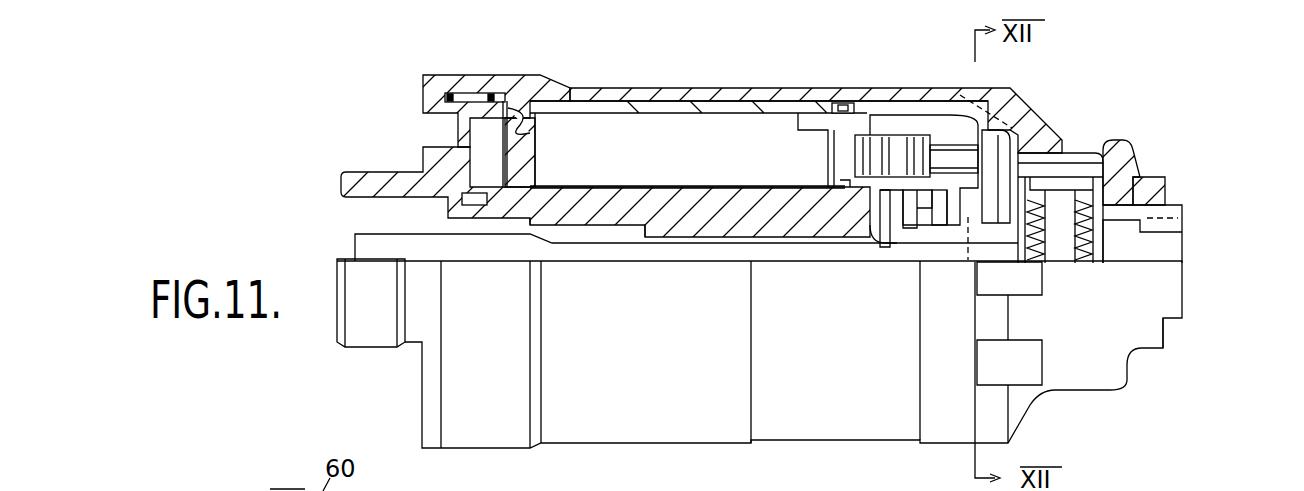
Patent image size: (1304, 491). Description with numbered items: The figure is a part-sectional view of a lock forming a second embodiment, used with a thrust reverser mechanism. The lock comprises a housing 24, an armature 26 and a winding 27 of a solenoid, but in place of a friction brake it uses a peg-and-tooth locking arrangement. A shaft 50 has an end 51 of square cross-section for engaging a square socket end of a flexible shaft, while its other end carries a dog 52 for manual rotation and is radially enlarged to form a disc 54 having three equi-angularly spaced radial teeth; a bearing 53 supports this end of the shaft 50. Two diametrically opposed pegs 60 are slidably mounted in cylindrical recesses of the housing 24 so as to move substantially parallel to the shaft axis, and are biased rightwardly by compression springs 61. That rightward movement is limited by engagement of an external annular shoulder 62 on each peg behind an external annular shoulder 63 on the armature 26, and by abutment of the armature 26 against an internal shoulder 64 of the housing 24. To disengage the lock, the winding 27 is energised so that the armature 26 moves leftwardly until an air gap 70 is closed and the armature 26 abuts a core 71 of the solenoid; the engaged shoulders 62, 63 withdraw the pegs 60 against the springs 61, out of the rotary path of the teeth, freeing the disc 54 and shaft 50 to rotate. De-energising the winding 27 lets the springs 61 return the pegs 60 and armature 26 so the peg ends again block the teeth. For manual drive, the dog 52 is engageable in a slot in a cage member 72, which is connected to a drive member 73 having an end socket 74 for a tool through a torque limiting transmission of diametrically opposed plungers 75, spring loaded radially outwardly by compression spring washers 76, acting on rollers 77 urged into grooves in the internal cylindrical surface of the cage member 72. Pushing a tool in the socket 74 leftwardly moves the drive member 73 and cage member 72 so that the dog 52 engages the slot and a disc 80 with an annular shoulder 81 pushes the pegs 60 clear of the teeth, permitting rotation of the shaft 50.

The housing 24 is at (937, 418).
The armature 26 is at (797, 223).
The winding 27 is at (630, 135).
The shaft 50 is at (650, 261).
The end 51 is at (368, 247).
The dog 52 is at (975, 240).
The bearing 53 is at (930, 213).
The disc 54 is at (1035, 152).
The pegs 60 is at (942, 130).
The compression springs 61 is at (880, 165).
The external annular shoulder 62 is at (900, 203).
The external annular shoulder 63 is at (913, 207).
The internal shoulder 64 is at (936, 200).
The air gap 70 is at (765, 207).
The core 71 is at (647, 207).
The cage member 72 is at (1073, 138).
The drive member 73 is at (1117, 213).
The end socket 74 is at (1178, 243).
The plungers 75 is at (1062, 230).
The compression spring washers 76 is at (1108, 263).
The rollers 77 is at (1110, 178).
The disc 80 is at (1020, 150).
The annular shoulder 81 is at (970, 198).